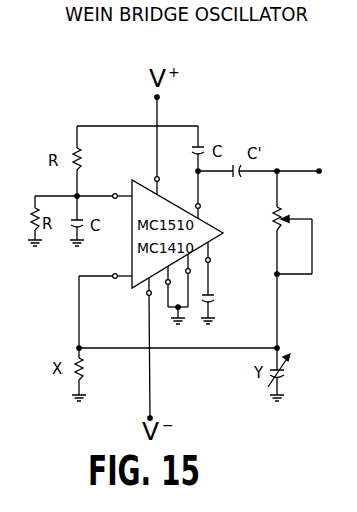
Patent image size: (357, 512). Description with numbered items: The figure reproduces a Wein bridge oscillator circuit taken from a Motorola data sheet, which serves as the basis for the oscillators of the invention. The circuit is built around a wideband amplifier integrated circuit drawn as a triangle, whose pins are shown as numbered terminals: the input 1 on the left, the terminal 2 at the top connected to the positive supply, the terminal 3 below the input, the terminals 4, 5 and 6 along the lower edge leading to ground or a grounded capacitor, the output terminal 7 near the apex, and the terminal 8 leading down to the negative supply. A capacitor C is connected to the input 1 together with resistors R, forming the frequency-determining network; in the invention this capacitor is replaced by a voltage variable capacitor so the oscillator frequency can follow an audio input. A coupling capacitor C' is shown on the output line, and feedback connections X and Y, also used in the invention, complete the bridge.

The input 1 is at (121, 207).
The positive supply pin 2 is at (163, 183).
The inverting input pin 3 is at (105, 301).
The pin 4 is at (194, 280).
The pin 5 is at (211, 283).
The pin 6 is at (177, 295).
The output pin 7 is at (204, 208).
The negative supply pin 8 is at (155, 348).